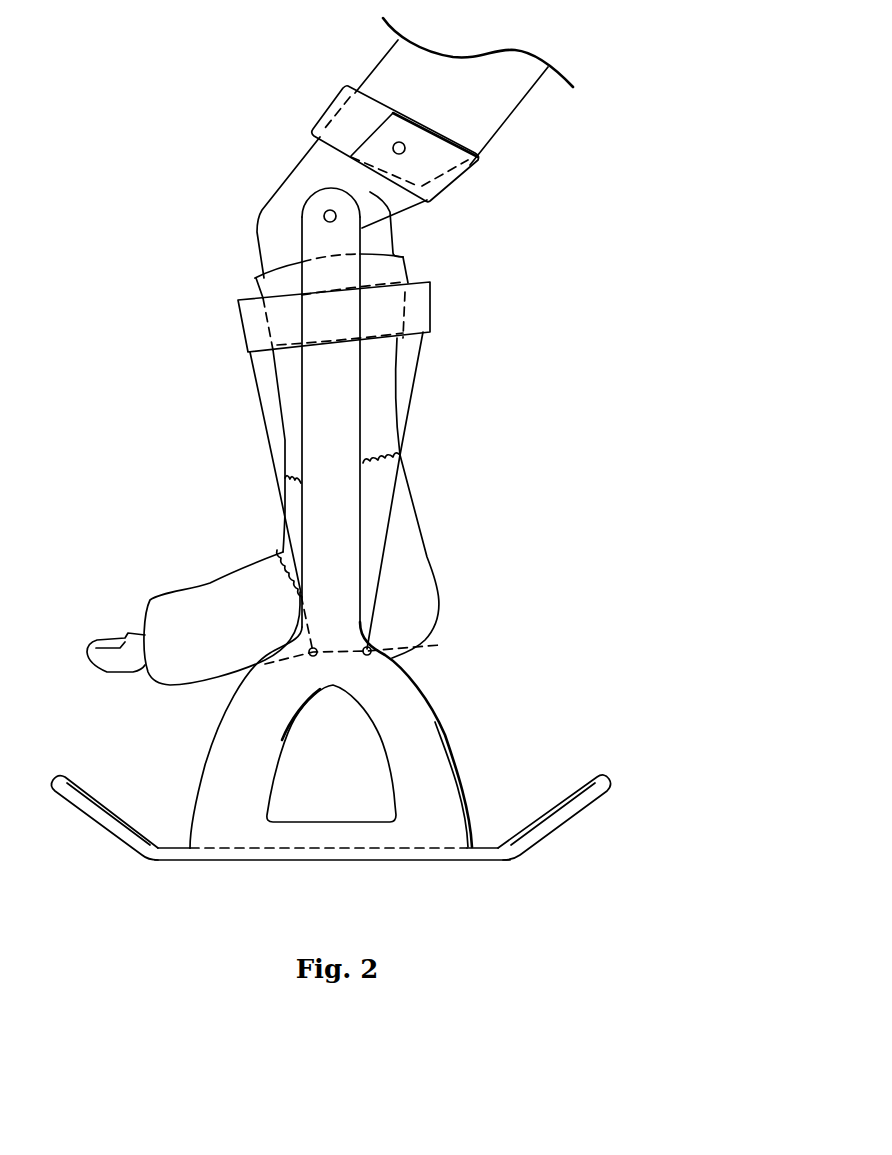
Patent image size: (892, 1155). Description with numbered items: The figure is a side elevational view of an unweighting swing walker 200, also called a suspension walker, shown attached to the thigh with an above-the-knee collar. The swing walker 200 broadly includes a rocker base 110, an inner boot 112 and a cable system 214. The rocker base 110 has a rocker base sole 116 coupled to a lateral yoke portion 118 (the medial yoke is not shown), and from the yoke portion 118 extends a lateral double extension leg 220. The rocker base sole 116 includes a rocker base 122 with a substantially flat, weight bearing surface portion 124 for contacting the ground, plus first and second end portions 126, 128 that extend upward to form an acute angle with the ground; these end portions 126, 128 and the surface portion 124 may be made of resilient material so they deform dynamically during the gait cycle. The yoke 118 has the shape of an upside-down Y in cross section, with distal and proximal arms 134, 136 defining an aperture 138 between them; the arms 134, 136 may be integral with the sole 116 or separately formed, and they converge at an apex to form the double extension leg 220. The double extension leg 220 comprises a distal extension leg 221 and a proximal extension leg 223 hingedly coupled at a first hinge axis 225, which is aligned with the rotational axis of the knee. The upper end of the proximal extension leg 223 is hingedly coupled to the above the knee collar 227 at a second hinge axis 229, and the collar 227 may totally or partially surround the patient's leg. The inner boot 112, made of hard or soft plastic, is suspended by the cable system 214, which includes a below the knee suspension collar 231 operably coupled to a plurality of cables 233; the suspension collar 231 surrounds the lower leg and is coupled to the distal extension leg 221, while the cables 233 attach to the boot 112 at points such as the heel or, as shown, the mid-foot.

The rocker base 110 is at (534, 688).
The boot 112 is at (193, 595).
The rocker base sole 116 is at (430, 858).
The lateral yoke portion 118 is at (430, 688).
The rocker base 122 is at (367, 835).
The weight bearing surface portion 124 is at (248, 858).
The first end portion 126 is at (76, 800).
The second end portion 128 is at (586, 800).
The distal arm 134 is at (220, 758).
The proximal arm 136 is at (435, 750).
The opening 138 is at (334, 778).
The swing walker 200 is at (612, 288).
The cable system 214 is at (410, 402).
The double extension leg 220 is at (363, 367).
The distal extension leg 221 is at (343, 483).
The proximal extension leg 223 is at (396, 214).
The first hinge axis 225 is at (322, 215).
The above the knee collar 227 is at (340, 118).
The second hinge axis 229 is at (406, 148).
The below the knee suspension collar 231 is at (250, 325).
The cables 233 is at (270, 432).